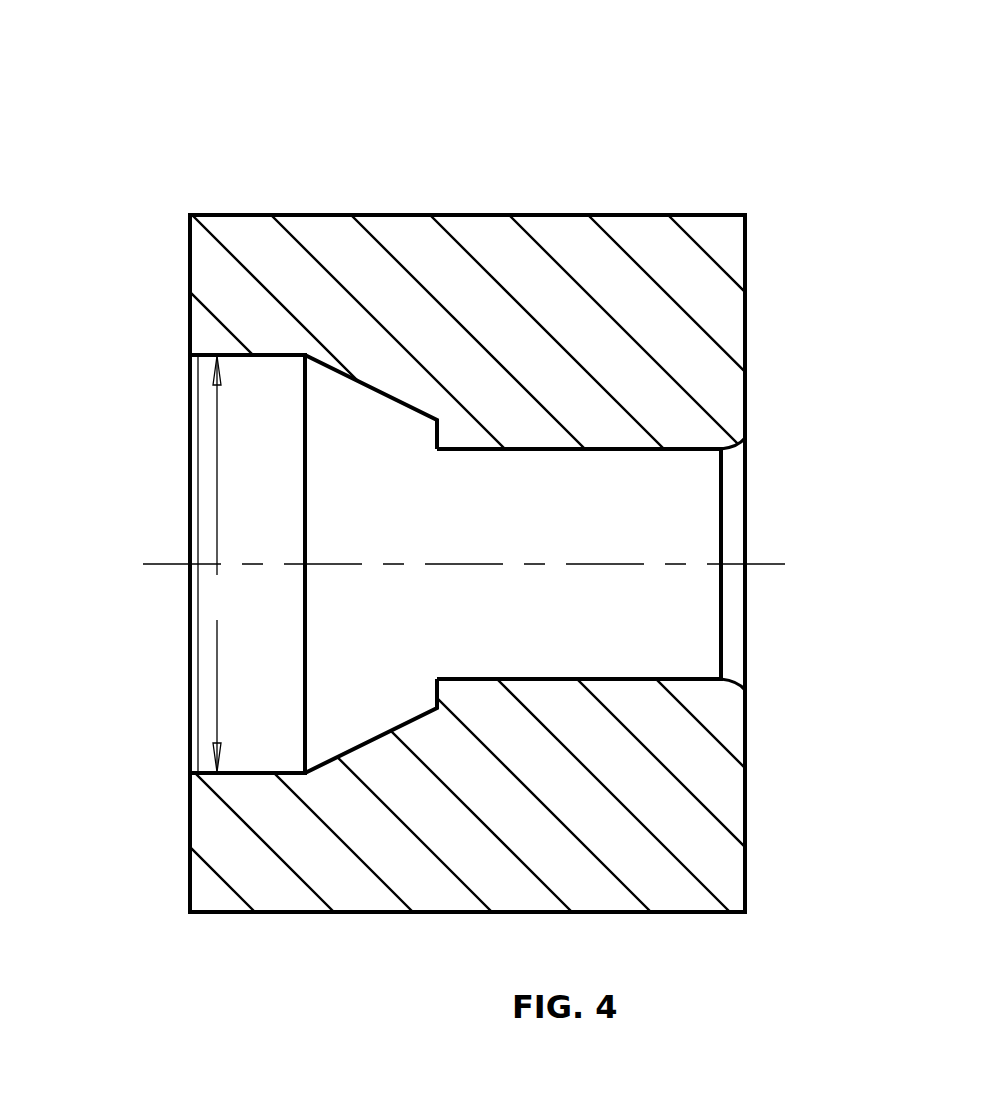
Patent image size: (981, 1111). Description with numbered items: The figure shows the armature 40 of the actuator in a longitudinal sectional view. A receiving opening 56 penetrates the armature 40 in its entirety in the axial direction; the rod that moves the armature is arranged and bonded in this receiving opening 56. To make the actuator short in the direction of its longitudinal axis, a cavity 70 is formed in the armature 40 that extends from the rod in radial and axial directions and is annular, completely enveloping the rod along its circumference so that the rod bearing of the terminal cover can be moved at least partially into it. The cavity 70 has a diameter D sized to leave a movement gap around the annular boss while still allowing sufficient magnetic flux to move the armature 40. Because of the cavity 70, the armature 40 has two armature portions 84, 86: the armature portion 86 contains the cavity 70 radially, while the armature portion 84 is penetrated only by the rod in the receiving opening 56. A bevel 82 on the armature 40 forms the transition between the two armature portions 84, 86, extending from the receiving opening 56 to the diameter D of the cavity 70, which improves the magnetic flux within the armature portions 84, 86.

The armature 40 is at (490, 491).
The receiving opening 56 is at (591, 564).
The cavity 70 is at (247, 564).
The bevel 82 is at (417, 417).
The armature portion 84 is at (690, 393).
The armature portion 86 is at (231, 818).